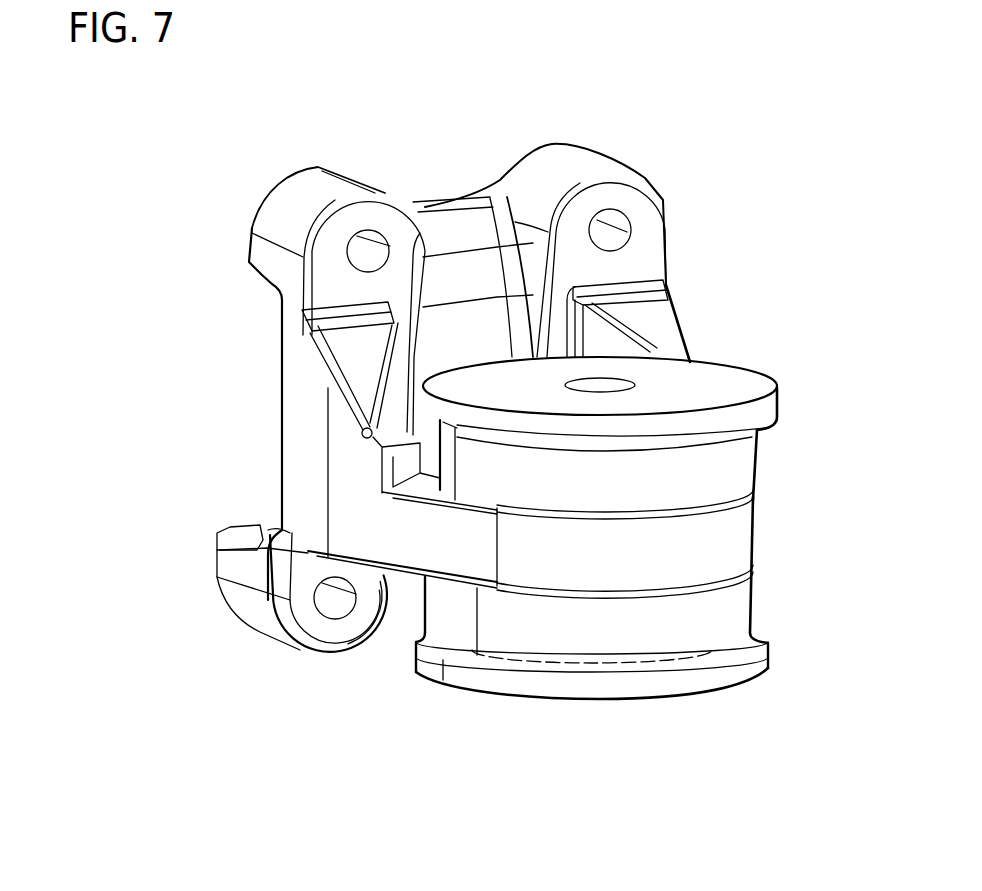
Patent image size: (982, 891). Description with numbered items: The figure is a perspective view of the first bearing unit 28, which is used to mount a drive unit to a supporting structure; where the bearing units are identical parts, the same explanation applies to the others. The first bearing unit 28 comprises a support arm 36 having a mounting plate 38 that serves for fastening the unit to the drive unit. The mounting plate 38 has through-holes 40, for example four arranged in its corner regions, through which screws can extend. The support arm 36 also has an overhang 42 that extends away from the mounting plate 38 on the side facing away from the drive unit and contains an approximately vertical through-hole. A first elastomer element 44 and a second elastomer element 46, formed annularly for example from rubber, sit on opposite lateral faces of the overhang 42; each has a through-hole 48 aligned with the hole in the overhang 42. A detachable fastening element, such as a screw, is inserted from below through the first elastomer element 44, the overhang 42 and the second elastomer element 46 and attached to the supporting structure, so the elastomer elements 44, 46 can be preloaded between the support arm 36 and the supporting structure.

The first bearing unit 28 is at (485, 95).
The support arm 36 is at (250, 420).
The mounting plate 38 is at (275, 215).
The through-hole 40 is at (367, 250).
The overhang 42 is at (737, 540).
The first elastomer element 44 is at (754, 478).
The second elastomer element 46 is at (690, 656).
The through-hole 48 is at (600, 388).